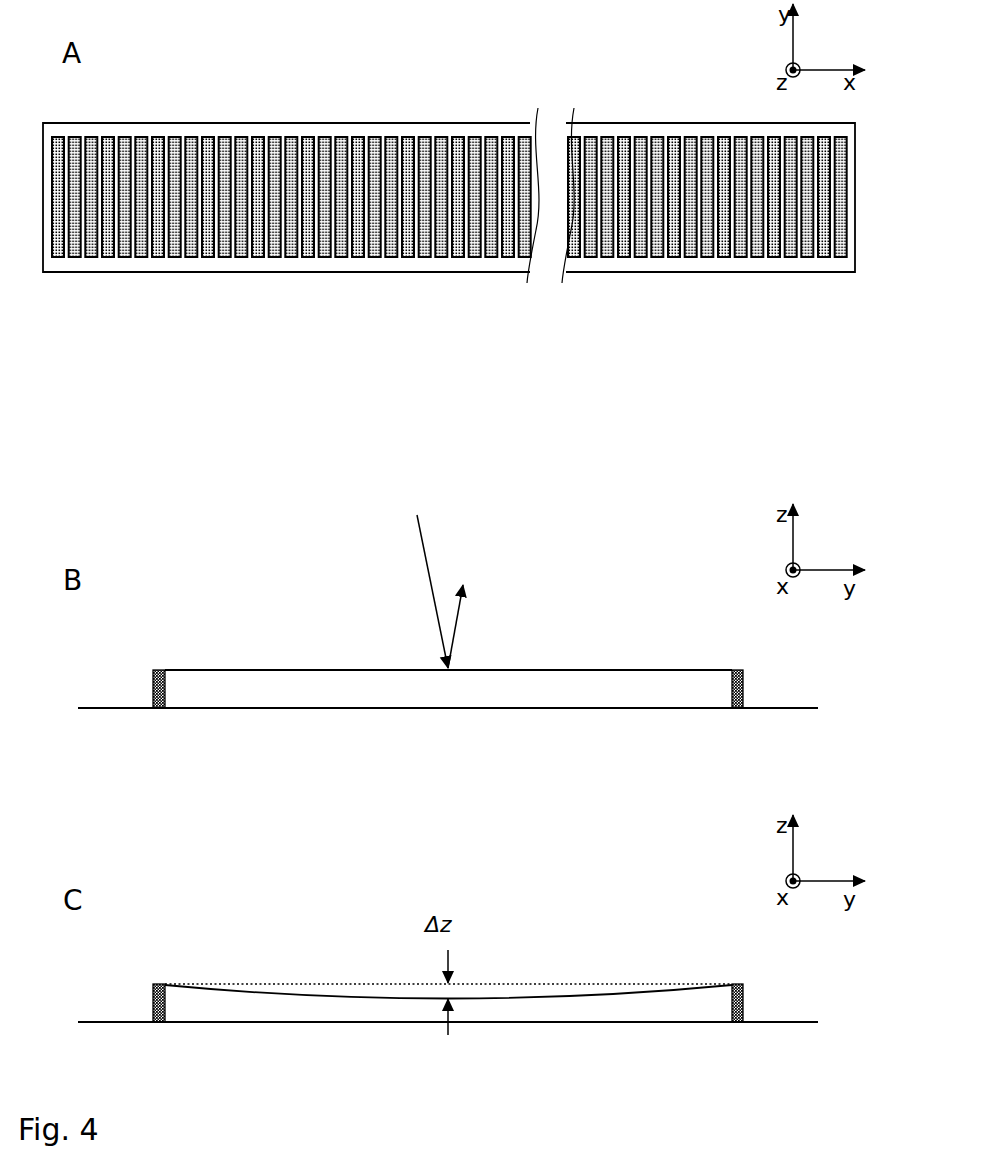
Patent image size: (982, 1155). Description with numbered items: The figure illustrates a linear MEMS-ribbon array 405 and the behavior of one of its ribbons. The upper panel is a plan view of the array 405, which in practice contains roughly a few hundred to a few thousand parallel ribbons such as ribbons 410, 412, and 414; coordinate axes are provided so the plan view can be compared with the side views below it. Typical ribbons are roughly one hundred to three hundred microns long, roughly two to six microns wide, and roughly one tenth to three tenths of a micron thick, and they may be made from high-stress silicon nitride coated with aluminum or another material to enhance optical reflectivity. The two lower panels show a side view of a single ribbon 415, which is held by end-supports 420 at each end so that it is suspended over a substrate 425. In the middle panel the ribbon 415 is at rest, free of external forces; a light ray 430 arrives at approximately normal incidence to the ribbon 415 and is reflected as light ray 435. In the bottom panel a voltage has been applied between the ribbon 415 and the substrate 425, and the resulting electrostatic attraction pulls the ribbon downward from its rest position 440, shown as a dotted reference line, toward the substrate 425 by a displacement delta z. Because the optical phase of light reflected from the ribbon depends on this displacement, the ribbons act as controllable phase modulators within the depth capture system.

The linear MEMS-ribbon array 405 is at (449, 168).
The ribbon 410 is at (190, 256).
The ribbon 412 is at (207, 256).
The ribbon 414 is at (222, 256).
The ribbon 415 is at (580, 668).
The end-supports 420 is at (155, 688).
The substrate 425 is at (530, 709).
The light ray 430 is at (424, 540).
The light ray 435 is at (462, 618).
The rest position 440 is at (333, 983).